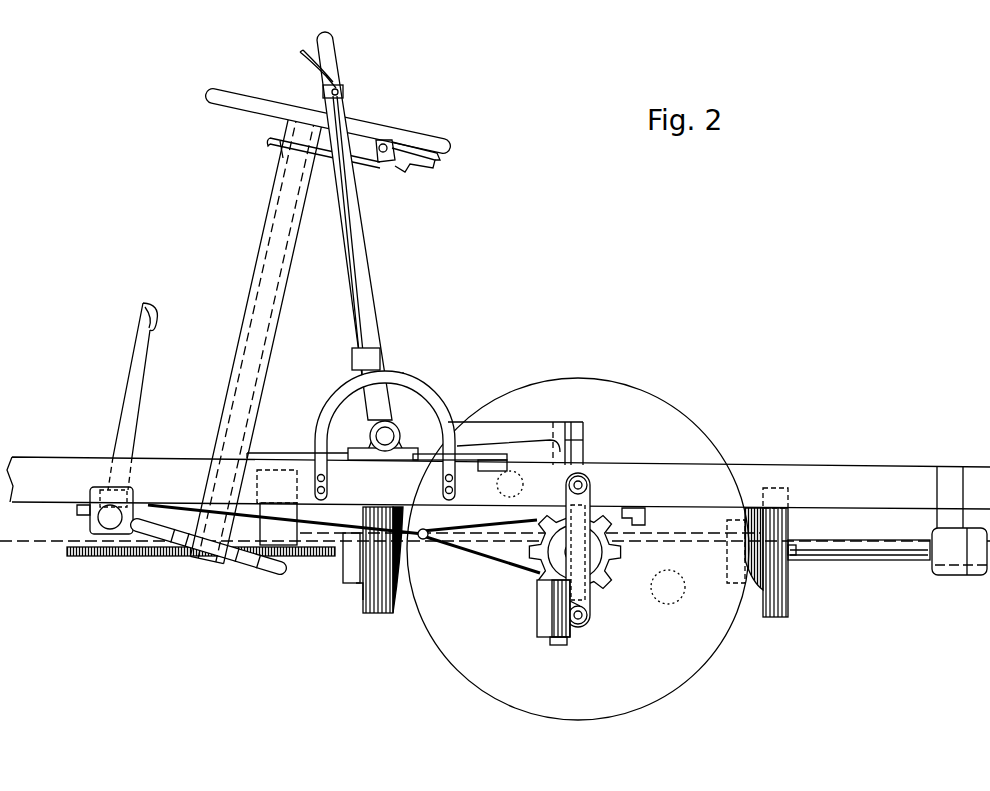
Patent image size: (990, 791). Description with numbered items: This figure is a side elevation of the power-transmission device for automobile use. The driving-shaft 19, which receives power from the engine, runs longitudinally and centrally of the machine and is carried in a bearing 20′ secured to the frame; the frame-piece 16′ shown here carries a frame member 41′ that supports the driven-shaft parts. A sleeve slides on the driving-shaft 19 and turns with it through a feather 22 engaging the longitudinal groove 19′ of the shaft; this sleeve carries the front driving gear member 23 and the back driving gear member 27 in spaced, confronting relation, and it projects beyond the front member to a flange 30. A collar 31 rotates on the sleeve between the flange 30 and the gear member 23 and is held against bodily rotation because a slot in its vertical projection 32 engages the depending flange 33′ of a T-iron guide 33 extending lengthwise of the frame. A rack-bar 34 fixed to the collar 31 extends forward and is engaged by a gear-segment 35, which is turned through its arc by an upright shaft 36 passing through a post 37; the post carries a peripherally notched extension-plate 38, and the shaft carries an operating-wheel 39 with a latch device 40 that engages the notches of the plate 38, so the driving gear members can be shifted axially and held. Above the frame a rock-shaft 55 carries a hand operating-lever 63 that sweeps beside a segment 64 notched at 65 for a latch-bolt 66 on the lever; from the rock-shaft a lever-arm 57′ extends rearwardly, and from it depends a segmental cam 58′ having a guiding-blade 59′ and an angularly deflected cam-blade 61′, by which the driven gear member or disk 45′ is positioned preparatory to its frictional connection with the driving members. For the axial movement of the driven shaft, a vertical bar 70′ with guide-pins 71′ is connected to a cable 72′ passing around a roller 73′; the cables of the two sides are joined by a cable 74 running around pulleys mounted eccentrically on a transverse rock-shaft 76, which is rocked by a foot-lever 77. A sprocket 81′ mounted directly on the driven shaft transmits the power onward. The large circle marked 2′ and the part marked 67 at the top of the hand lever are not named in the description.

The frame-piece 16′ is at (495, 499).
The wheel 2′ is at (578, 549).
The foot-lever 77 is at (141, 383).
The rock-shaft 76 is at (105, 518).
The cable 74 is at (183, 506).
The rack-bar 34 is at (312, 556).
The gear-segment 35 is at (266, 573).
The flange 30 is at (344, 571).
The collar 31 is at (358, 583).
The vertical projection 32 is at (348, 512).
The post 37 is at (286, 303).
The upright shaft 36 is at (311, 149).
The extension-plate 38 is at (367, 168).
The operating-wheel 39 is at (380, 128).
The latch device 40 is at (425, 166).
The hand operating-lever 63 is at (363, 240).
The latch-bolt 66 is at (347, 258).
The latch 67 is at (306, 68).
The notches 65 is at (388, 370).
The segment 64 is at (418, 380).
The T-iron guide 33 is at (478, 460).
The depending flange 33′ is at (510, 484).
The rock-shaft 55 is at (395, 430).
The lever-arm 57′ is at (500, 426).
The cam-blade 61′ is at (584, 428).
The segmental cam 58′ is at (576, 450).
The guiding-blade 59′ is at (556, 442).
The front driving gear member 23 is at (400, 594).
The cable 72′ is at (516, 566).
The sprocket 81′ is at (612, 550).
The guide-pins 71′ is at (583, 628).
The vertical bar 70′ is at (591, 598).
The driven gear member 45′ is at (596, 626).
The roller 73′ is at (540, 626).
The frame member 41′ is at (634, 510).
The back driving gear member 27 is at (752, 592).
The driving-shaft 19 is at (918, 561).
The longitudinal groove 19′ is at (838, 553).
The feather 22 is at (790, 553).
The bearing 20′ is at (940, 576).